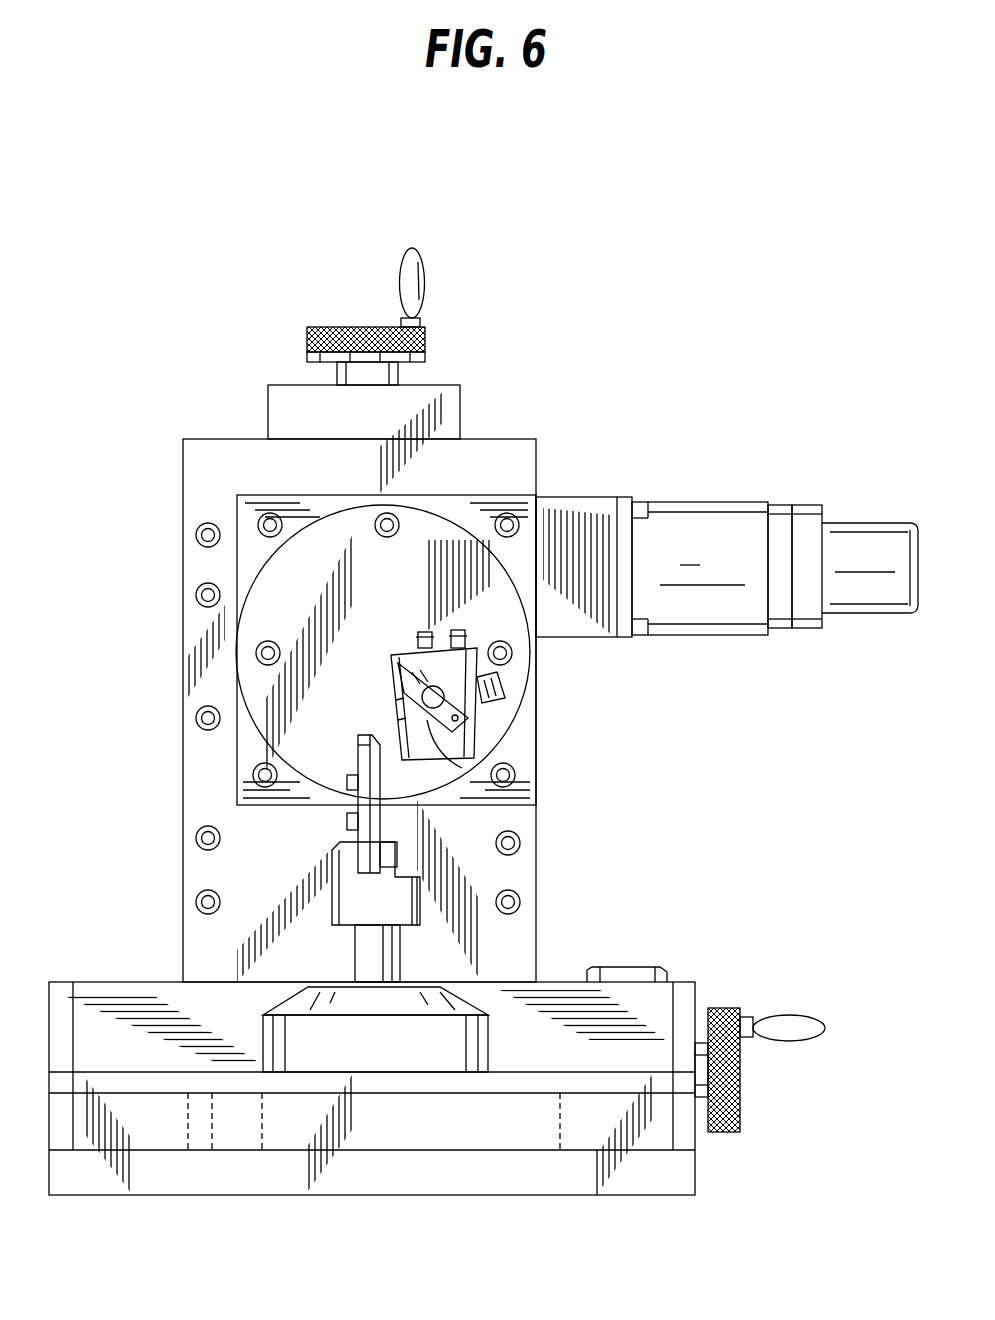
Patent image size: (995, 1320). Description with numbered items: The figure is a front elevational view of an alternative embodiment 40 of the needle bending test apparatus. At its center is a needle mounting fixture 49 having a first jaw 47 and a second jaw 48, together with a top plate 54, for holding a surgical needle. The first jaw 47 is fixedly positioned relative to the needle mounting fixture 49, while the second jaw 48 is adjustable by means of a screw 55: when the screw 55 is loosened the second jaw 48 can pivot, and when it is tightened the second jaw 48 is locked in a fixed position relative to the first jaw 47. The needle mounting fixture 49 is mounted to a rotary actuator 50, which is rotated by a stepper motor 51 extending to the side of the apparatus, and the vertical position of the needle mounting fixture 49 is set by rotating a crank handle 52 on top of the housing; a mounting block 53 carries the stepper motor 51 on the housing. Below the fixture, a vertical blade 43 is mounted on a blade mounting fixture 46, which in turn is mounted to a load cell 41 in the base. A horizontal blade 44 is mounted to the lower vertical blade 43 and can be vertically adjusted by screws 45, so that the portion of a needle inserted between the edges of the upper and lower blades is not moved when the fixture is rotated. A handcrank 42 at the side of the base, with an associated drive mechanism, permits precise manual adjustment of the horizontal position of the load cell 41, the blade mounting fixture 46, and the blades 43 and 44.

The alternative embodiment 40 is at (472, 1215).
The load cell 41 is at (372, 1062).
The handcrank 42 is at (742, 1083).
The vertical blade 43 is at (380, 827).
The horizontal blade 44 is at (360, 768).
The screws 45 is at (350, 822).
The blade mounting fixture 46 is at (335, 916).
The first jaw 47 is at (397, 708).
The second jaw 48 is at (391, 657).
The needle mounting fixture 49 is at (510, 712).
The rotary actuator 50 is at (530, 670).
The stepper motor 51 is at (736, 520).
The crank handle 52 is at (428, 342).
The microscope mount 53 is at (580, 515).
The top plate 54 is at (418, 651).
The screw 55 is at (462, 768).